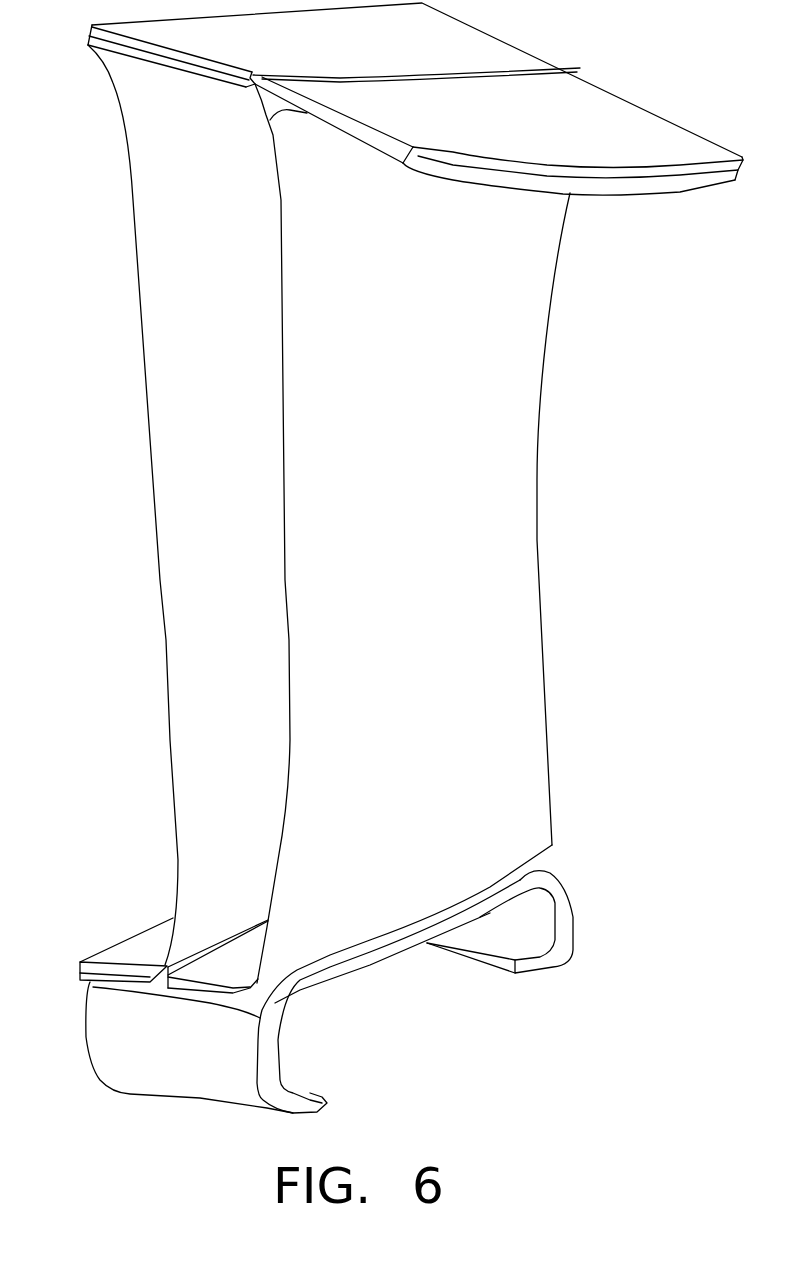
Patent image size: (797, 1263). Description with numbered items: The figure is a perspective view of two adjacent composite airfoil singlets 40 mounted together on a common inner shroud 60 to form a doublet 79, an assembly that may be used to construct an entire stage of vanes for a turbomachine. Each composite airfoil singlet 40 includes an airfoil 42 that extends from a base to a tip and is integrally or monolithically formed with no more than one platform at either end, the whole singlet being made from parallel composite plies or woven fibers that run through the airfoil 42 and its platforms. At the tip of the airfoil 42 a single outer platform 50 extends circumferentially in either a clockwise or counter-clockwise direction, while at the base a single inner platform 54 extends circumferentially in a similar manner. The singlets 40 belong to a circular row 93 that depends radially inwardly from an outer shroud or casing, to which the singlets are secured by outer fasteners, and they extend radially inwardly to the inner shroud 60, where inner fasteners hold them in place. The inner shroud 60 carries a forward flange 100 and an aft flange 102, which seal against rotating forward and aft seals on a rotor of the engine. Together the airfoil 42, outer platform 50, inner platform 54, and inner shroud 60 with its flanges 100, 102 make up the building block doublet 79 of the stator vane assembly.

The composite airfoil singlet 40 is at (268, 650).
The airfoil 42 is at (383, 514).
The outer platform 50 is at (643, 123).
The inner platform 54 is at (212, 968).
The inner shroud 60 is at (200, 1072).
The doublet 79 is at (103, 1112).
The circular row 93 is at (530, 618).
The forward flange 100 is at (310, 1093).
The aft flange 102 is at (540, 965).